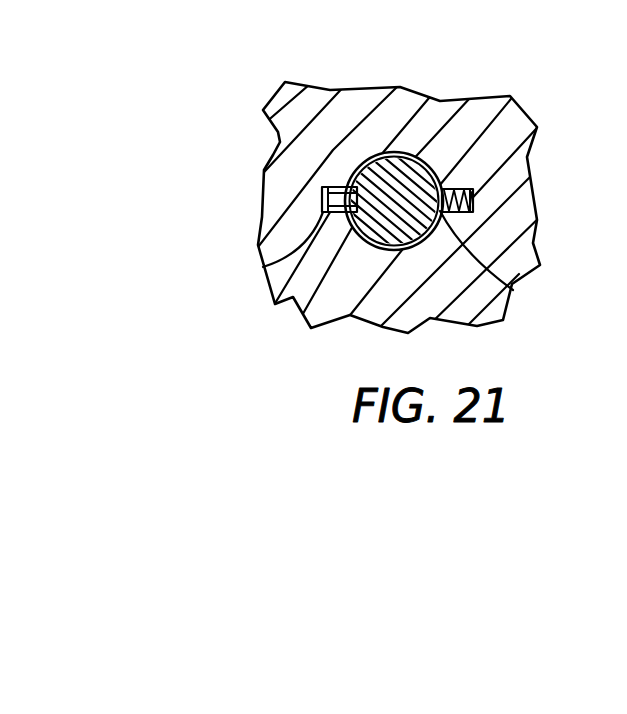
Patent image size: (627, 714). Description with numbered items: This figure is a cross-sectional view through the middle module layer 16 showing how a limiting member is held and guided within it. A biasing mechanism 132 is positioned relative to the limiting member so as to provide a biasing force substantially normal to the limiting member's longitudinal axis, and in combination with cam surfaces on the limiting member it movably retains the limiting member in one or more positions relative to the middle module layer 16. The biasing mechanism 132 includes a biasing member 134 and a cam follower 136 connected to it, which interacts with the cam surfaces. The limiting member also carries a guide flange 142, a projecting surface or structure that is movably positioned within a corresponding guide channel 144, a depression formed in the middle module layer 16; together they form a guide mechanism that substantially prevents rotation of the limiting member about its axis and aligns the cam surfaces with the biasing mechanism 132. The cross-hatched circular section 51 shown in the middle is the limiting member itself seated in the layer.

The middle module layer 16 is at (292, 87).
The pin / shaft 51 is at (400, 138).
The biasing mechanism 132 is at (477, 142).
The biasing member 134 is at (474, 194).
The cam follower 136 is at (513, 290).
The guide flange 142 is at (264, 266).
The guide channel 144 is at (333, 187).